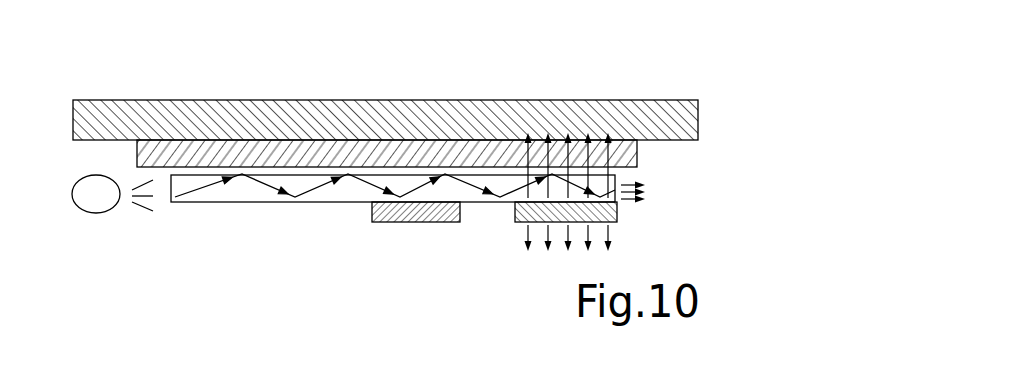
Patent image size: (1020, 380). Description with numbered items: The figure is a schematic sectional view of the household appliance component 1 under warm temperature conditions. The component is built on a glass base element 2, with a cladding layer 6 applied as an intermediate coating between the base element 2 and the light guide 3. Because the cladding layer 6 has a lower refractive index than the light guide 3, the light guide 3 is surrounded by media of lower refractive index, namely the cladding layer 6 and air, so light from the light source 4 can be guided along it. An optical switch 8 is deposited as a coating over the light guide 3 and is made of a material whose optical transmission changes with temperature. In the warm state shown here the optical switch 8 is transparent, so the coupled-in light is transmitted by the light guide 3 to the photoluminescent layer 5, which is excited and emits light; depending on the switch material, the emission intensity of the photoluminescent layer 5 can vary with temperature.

The household appliance component 1 is at (674, 71).
The base element 2 is at (272, 108).
The light guide 3 is at (248, 193).
The light source 4 is at (97, 205).
The photoluminescent layer 5 is at (550, 215).
The cladding layer 6 is at (342, 153).
The optical switch 8 is at (412, 210).